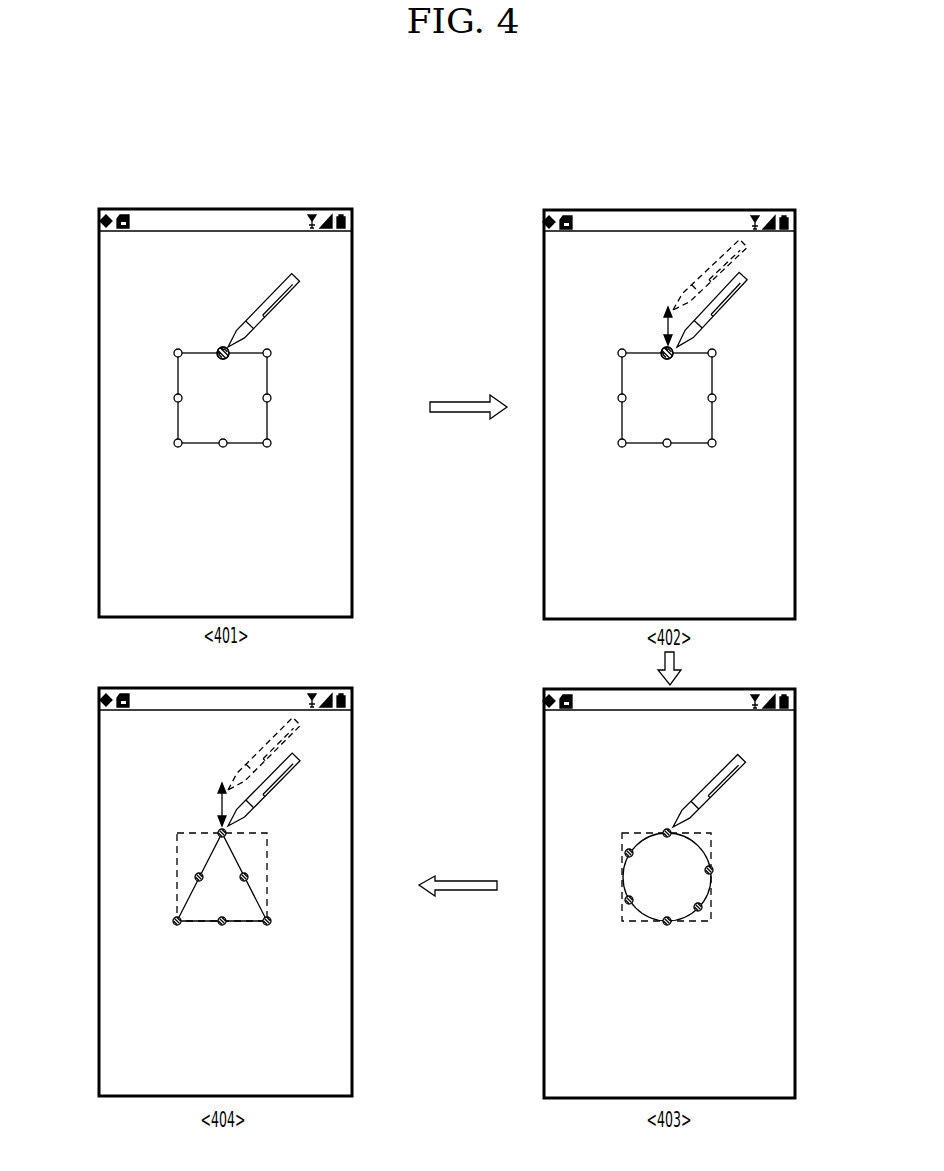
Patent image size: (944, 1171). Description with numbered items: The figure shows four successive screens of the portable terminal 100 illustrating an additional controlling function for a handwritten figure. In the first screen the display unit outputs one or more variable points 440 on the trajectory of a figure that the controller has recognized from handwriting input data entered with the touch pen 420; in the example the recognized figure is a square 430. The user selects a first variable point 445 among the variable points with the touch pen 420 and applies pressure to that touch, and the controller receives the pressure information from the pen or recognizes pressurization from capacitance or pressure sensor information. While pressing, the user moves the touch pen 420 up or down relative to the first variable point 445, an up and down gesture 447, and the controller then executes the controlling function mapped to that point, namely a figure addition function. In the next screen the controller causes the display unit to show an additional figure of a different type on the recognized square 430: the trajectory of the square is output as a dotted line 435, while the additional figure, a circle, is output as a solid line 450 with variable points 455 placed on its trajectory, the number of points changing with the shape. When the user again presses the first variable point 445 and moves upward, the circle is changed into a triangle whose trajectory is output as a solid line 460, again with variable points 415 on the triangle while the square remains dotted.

The portable terminal 100 is at (360, 280).
The touch pen 420 is at (228, 345).
The square 430 is at (253, 422).
The variable points 440 is at (270, 351).
The first variable point 445 is at (218, 350).
The hovering up-down movement 447 is at (665, 322).
The dotted line 435 is at (711, 833).
The solid line 450 is at (713, 852).
The circle object 455 is at (711, 900).
The triangle control point 415 is at (248, 877).
The solid line 460 is at (243, 907).